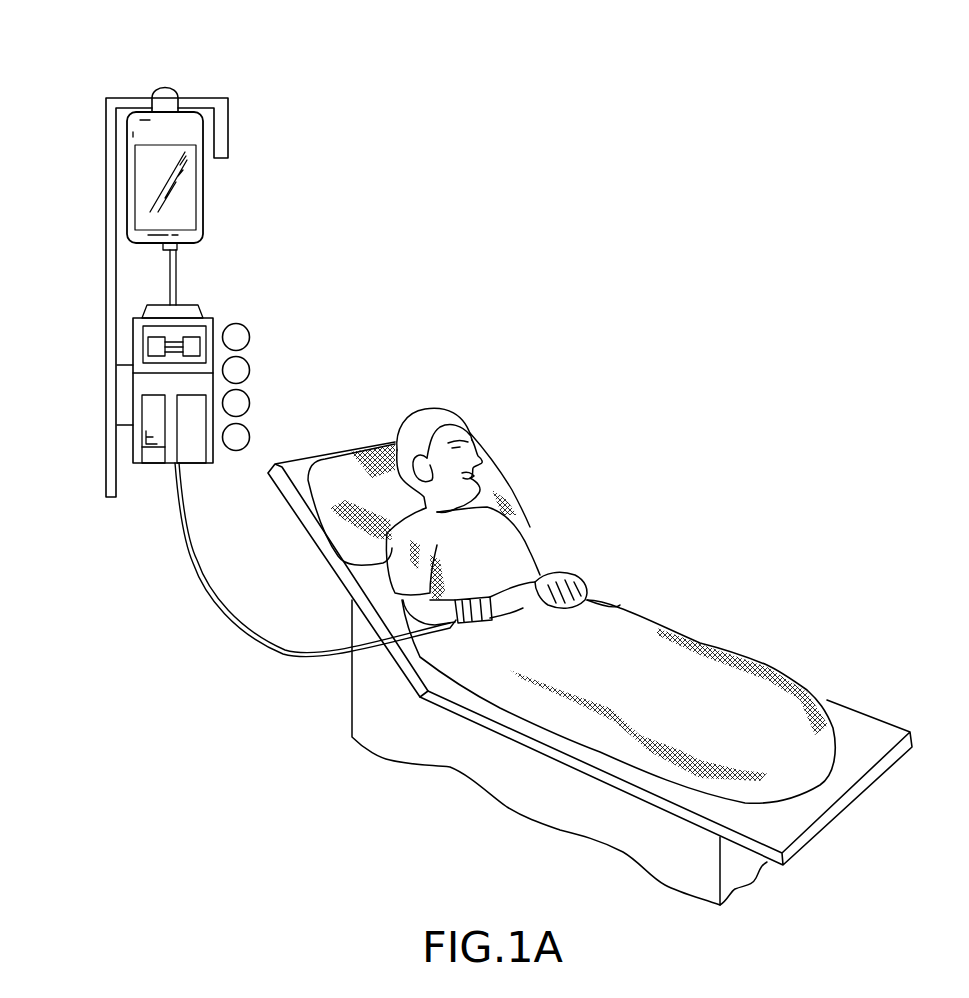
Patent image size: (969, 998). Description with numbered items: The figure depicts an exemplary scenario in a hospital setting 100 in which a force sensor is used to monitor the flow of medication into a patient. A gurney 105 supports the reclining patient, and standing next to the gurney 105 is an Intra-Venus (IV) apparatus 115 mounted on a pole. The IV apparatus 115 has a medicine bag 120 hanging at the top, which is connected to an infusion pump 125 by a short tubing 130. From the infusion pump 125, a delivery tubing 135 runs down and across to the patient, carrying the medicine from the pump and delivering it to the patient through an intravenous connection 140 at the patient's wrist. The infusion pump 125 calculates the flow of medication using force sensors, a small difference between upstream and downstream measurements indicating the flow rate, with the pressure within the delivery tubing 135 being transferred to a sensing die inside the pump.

The hospital setting 100 is at (748, 605).
The gurney 105 is at (783, 693).
The Intra-Venus (IV) apparatus 115 is at (232, 233).
The medicine bag 120 is at (192, 125).
The infusion pump 125 is at (141, 390).
The tubing 130 is at (177, 283).
The delivery tubing 135 is at (190, 557).
The intravenous connection 140 is at (475, 597).